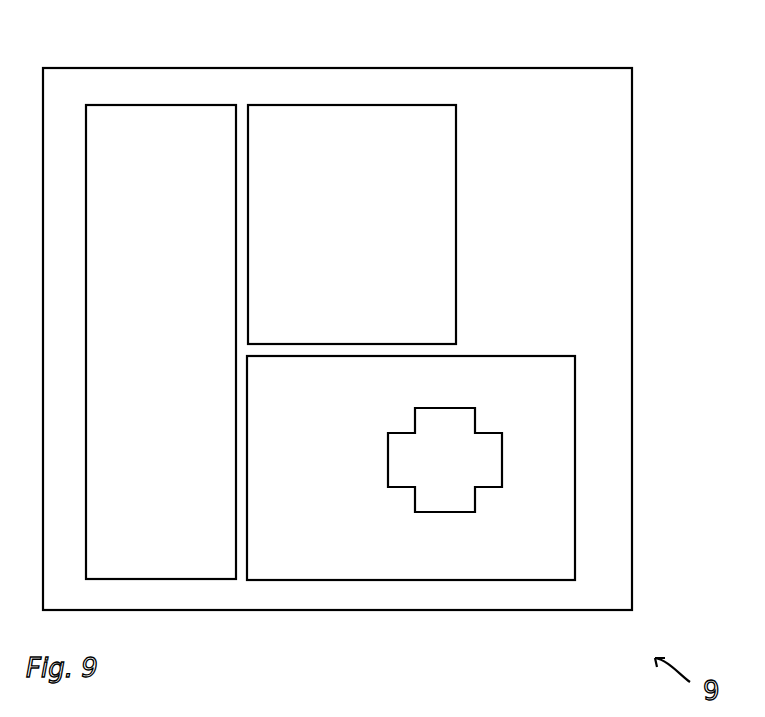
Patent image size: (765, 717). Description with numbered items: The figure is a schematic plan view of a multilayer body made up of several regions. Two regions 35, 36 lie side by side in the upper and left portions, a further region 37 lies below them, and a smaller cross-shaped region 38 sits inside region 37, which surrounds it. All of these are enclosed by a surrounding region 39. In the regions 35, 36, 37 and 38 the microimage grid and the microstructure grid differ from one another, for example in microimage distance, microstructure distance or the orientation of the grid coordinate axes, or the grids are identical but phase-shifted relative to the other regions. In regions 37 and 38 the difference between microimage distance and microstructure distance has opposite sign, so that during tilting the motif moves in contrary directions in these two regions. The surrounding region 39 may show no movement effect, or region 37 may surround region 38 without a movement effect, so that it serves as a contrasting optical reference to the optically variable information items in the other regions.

The surrounding region 39 is at (615, 273).
The region 36 is at (175, 112).
The region 35 is at (350, 112).
The region 37 is at (573, 453).
The region 38 is at (437, 500).